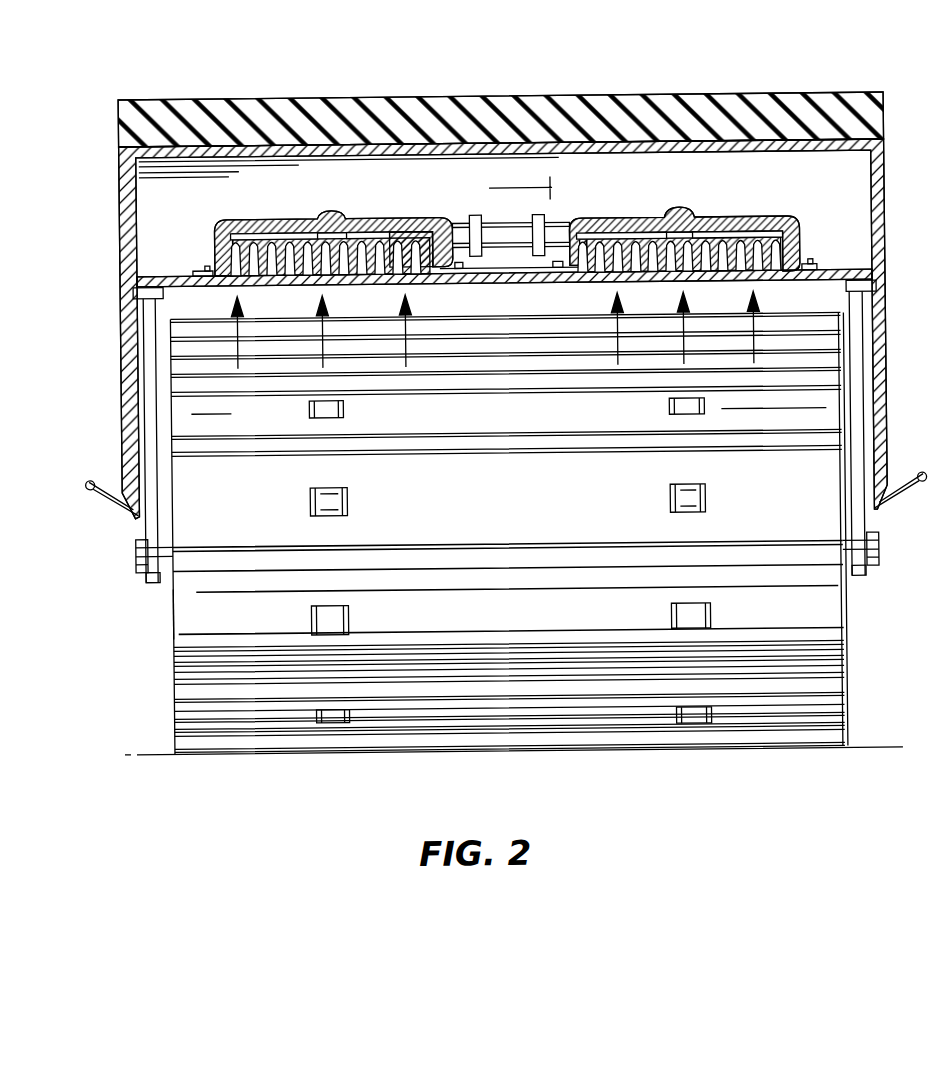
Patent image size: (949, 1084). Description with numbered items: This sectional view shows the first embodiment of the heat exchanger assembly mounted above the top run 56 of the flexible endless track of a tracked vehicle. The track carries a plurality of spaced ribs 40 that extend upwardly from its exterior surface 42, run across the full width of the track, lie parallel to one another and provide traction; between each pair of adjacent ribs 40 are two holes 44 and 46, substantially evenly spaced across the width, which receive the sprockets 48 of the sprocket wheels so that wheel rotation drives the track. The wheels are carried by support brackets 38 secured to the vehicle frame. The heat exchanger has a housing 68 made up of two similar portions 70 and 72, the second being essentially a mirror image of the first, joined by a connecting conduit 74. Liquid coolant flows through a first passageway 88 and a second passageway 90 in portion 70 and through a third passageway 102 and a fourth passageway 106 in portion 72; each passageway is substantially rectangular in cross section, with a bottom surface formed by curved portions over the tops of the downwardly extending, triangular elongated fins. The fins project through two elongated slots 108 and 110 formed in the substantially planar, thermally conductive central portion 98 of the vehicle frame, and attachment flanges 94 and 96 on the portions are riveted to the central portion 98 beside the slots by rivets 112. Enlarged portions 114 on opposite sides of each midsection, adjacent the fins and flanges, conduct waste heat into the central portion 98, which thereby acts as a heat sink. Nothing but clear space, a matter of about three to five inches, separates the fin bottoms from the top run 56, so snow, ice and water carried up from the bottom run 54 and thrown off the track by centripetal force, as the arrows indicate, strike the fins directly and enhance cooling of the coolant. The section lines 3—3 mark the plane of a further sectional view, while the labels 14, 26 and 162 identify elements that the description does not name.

The section line 3- 3 is at (99, 212).
The housing 14 is at (886, 158).
The insulation block 26 is at (678, 103).
The support brackets 38 is at (142, 522).
The spaced ribs 40 is at (829, 564).
The exterior surface 42 is at (828, 715).
The hole 44 is at (704, 498).
The hole 46 is at (346, 506).
The sprockets 48 is at (307, 504).
The bottom run 54 is at (778, 760).
The top run 56 is at (526, 314).
The housing 68 is at (573, 185).
The first portion 70 is at (333, 247).
The second portion 72 is at (684, 245).
The connecting conduit 74 is at (526, 224).
The first passageway 88 is at (284, 228).
The second passageway 90 is at (402, 222).
The attachment flange 94 is at (197, 270).
The attachment flange 96 is at (460, 273).
The central portion 98 is at (152, 268).
The third passageway 102 is at (646, 224).
The fourth passageway 106 is at (730, 228).
The elongated slot 108 is at (424, 278).
The elongated slot 110 is at (585, 275).
The rivets 112 is at (197, 288).
The enlarged portions 114 is at (225, 255).
The panel edge 162 is at (167, 609).